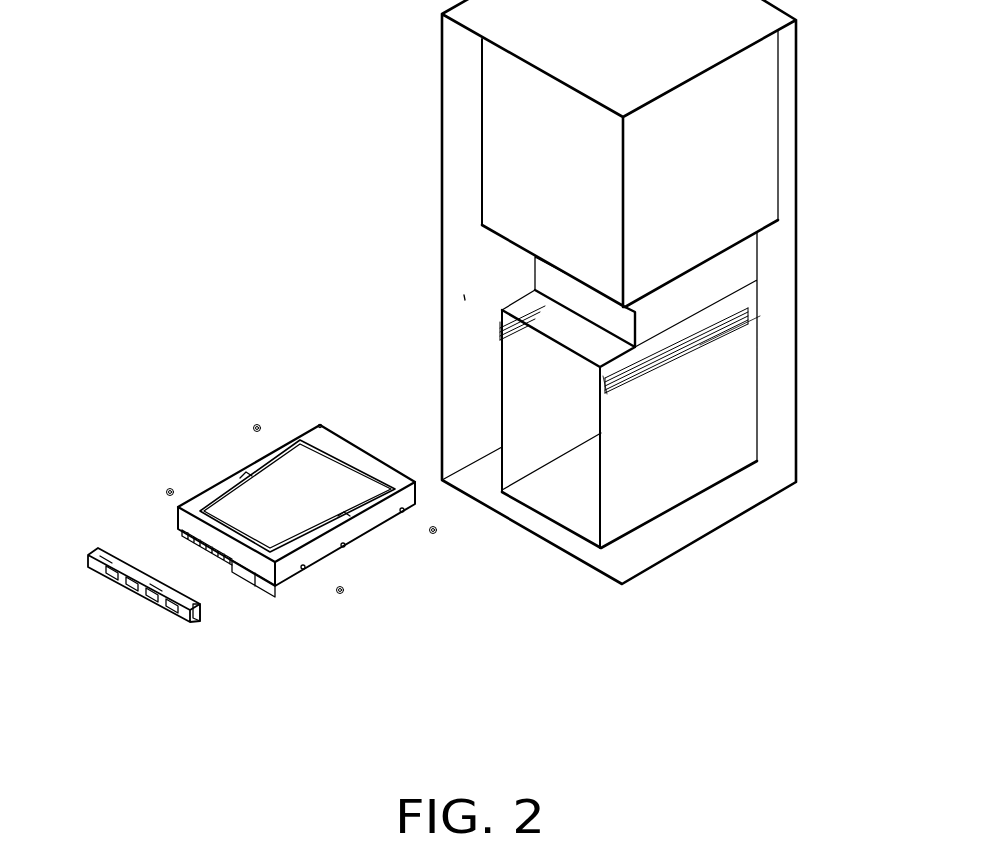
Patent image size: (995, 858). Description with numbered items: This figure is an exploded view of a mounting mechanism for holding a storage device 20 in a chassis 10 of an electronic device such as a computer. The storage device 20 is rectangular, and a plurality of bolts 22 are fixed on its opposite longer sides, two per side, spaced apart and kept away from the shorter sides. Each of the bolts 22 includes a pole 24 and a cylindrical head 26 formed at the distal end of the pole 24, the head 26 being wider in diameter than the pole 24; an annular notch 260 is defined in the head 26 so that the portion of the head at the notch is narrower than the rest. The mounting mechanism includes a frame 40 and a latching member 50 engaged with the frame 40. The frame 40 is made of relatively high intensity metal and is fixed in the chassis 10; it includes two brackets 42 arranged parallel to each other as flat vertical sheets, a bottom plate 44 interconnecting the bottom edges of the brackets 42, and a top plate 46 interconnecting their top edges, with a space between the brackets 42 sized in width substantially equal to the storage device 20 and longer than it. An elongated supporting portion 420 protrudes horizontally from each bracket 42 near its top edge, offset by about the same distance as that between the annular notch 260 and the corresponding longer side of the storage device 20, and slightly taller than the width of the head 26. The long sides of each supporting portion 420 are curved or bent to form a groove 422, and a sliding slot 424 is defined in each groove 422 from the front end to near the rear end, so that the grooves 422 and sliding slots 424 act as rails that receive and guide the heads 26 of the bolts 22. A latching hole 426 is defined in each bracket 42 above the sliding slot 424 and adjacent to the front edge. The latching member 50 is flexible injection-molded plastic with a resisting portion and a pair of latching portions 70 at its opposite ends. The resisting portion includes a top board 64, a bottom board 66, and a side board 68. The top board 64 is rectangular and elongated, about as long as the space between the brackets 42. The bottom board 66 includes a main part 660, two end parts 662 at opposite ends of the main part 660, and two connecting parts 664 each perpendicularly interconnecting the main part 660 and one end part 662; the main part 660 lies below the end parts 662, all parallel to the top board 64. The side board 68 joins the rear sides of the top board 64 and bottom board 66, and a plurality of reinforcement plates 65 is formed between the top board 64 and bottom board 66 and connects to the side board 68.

The chassis 10 is at (468, 184).
The storage device 20 is at (296, 521).
The bolts 22 is at (282, 616).
The pole 24 is at (335, 588).
The cylindrical head 26 is at (288, 657).
The annular notch 260 is at (327, 598).
The frame 40 is at (622, 485).
The brackets 42 is at (652, 495).
The bottom plate 44 is at (578, 505).
The top plate 46 is at (573, 337).
The supporting portion 420 is at (748, 366).
The groove 422 is at (507, 340).
The sliding slot 424 is at (706, 342).
The latching hole 426 is at (605, 378).
The latching member 50 is at (153, 584).
The top board 64 is at (127, 557).
The reinforcement plates 65 is at (157, 577).
The bottom board 66 is at (97, 622).
The main part 660 is at (130, 624).
The end parts 662 is at (113, 573).
The connecting parts 664 is at (127, 590).
The side board 68 is at (163, 607).
The latching portions 70 is at (195, 622).